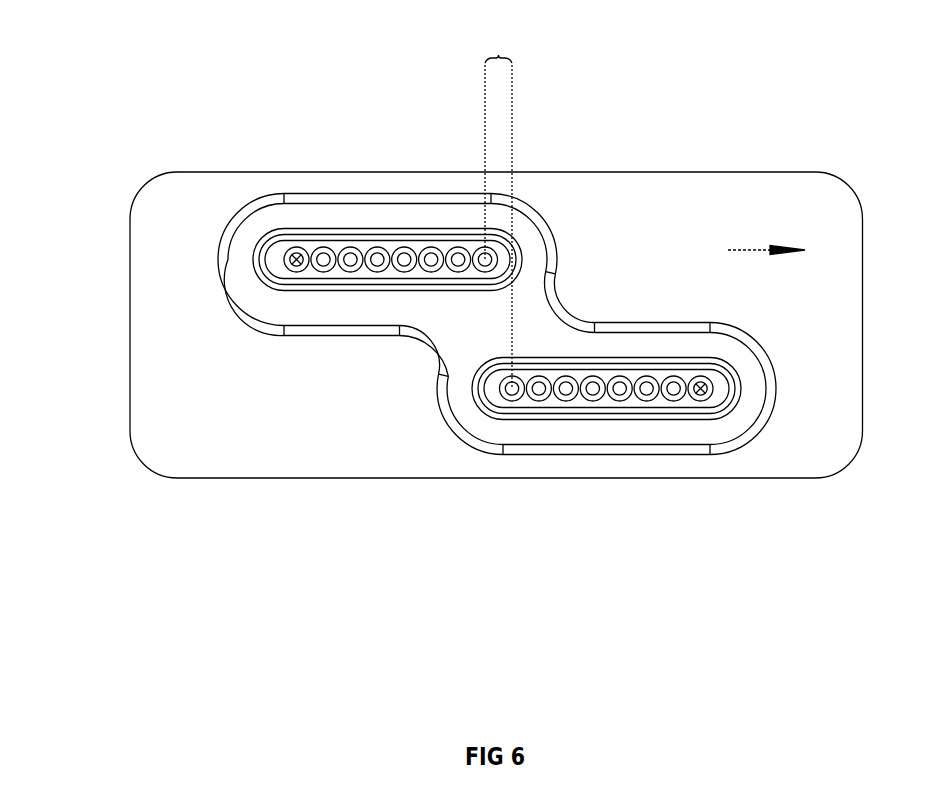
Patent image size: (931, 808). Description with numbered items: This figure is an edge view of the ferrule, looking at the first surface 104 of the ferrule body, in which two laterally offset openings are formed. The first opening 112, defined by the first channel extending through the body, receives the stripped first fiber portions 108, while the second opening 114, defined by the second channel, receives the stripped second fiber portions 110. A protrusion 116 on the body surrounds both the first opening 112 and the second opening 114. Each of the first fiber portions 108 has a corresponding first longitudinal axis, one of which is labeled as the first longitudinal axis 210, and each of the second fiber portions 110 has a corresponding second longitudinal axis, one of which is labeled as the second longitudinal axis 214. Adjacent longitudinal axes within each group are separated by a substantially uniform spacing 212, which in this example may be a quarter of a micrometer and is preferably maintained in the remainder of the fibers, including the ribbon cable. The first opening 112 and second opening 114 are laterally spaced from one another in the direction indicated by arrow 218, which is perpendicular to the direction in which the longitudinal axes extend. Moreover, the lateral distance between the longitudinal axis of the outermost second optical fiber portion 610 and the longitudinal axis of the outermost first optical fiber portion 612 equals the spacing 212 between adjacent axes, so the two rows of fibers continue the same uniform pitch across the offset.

The first surface 104 is at (450, 373).
The first fiber portions 108 is at (583, 501).
The second fiber portions 110 is at (406, 193).
The first opening 112 is at (621, 514).
The second opening 114 is at (279, 216).
The protrusion 116 is at (650, 440).
The first longitudinal axis 210 is at (761, 497).
The spacing 212 is at (541, 196).
The second longitudinal axis 214 is at (237, 181).
The lateral direction arrow 218 is at (745, 251).
The outermost second optical fiber portion 610 is at (426, 178).
The outermost first optical fiber portion 612 is at (506, 497).